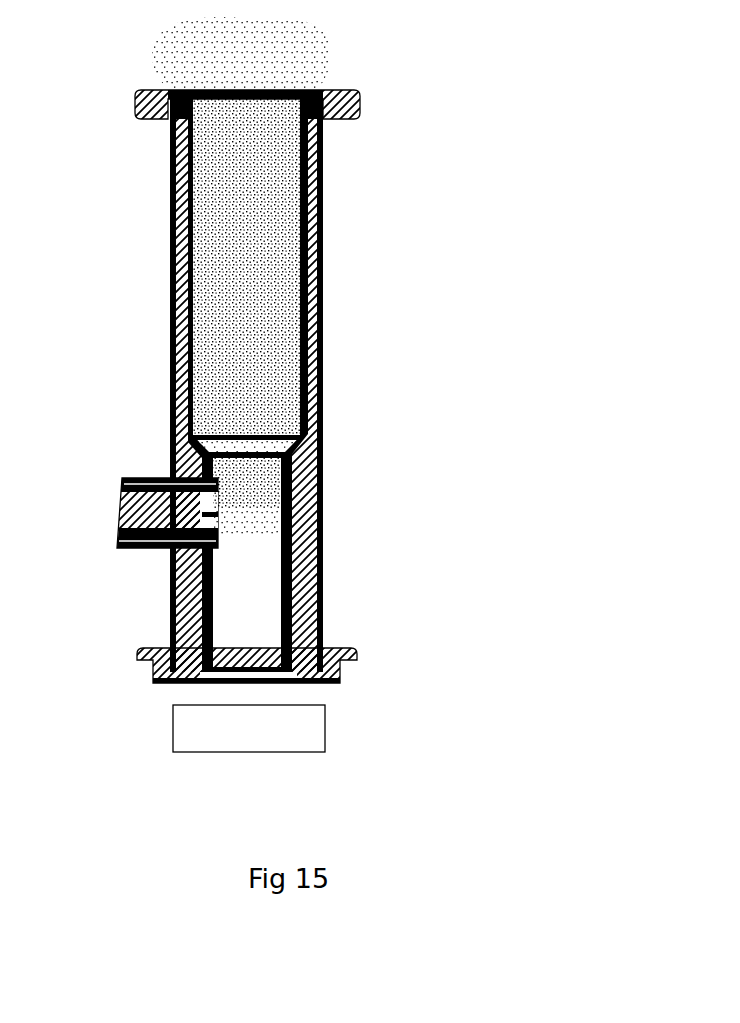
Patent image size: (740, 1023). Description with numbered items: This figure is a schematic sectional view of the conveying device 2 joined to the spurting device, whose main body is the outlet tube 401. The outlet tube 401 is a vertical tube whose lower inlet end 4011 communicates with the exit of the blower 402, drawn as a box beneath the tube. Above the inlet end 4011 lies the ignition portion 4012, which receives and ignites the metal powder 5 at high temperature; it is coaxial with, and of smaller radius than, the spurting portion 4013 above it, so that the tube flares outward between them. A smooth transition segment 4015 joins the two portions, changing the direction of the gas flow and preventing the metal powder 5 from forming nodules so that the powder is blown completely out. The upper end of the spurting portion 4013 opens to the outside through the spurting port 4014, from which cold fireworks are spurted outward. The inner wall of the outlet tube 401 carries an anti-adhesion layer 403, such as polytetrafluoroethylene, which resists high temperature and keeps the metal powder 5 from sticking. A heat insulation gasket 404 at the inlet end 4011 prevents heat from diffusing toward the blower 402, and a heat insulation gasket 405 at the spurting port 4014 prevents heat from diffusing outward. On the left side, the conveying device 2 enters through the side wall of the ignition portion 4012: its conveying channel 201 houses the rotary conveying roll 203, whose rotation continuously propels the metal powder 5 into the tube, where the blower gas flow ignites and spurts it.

The conveying device 2 is at (119, 519).
The metal powder 5 is at (203, 73).
The conveying channel 201 is at (146, 565).
The rotary conveying roll 203 is at (157, 482).
The outlet tube 401 is at (281, 381).
The blower 402 is at (292, 738).
The anti-adhesion layer 403 is at (172, 240).
The heat insulation gasket near the exit of the blower 404 is at (331, 648).
The heat insulation gasket at the outlet 405 is at (333, 102).
The inlet end 4011 is at (243, 673).
The ignition portion 4012 is at (318, 532).
The spurting portion 4013 is at (245, 318).
The spurting port 4014 is at (253, 97).
The smooth transition segment 4015 is at (288, 443).